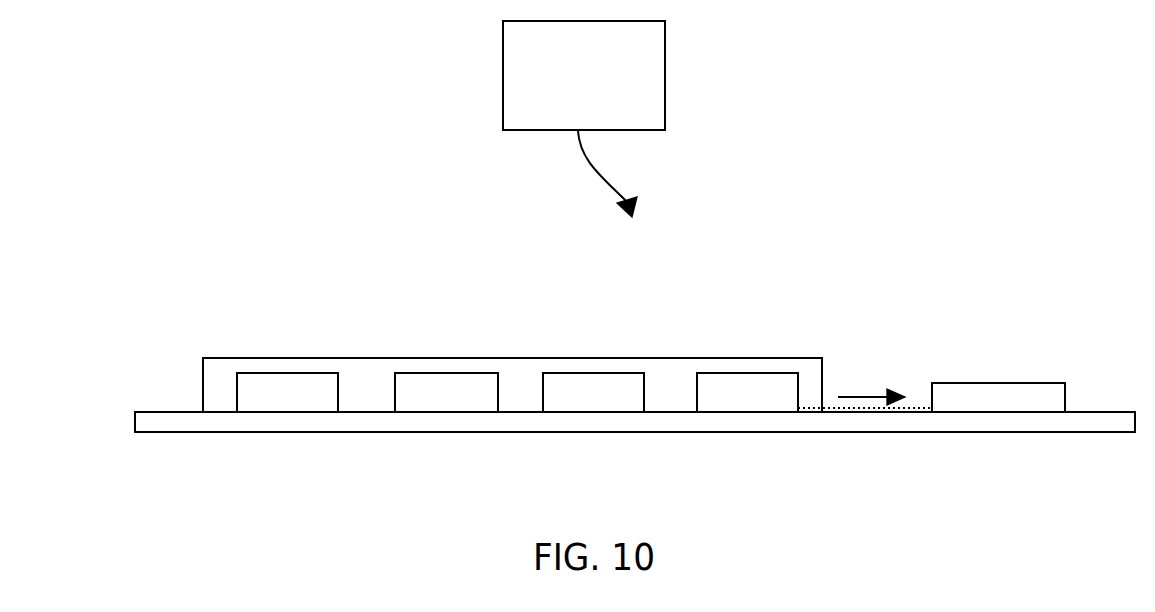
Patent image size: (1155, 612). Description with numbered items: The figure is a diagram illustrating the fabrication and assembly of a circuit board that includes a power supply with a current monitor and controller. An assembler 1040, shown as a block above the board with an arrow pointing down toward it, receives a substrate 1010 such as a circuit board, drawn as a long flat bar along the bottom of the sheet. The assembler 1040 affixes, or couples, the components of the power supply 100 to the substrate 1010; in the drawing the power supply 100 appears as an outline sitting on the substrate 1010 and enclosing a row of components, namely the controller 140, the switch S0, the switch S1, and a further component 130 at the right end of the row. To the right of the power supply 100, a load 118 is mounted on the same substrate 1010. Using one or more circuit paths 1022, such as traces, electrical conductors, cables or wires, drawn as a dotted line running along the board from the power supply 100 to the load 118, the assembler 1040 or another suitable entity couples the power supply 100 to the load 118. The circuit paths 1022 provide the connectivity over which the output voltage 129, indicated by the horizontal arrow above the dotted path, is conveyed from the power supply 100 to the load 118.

The assembler 1040 is at (607, 99).
The power supply 100 is at (190, 355).
The controller 140 is at (270, 402).
The switch S0 is at (434, 402).
The switch S1 is at (581, 402).
The component 130 is at (730, 402).
The output voltage 129 is at (862, 390).
The load 118 is at (1020, 378).
The circuit paths 1022 is at (860, 412).
The substrate 1010 is at (1095, 433).